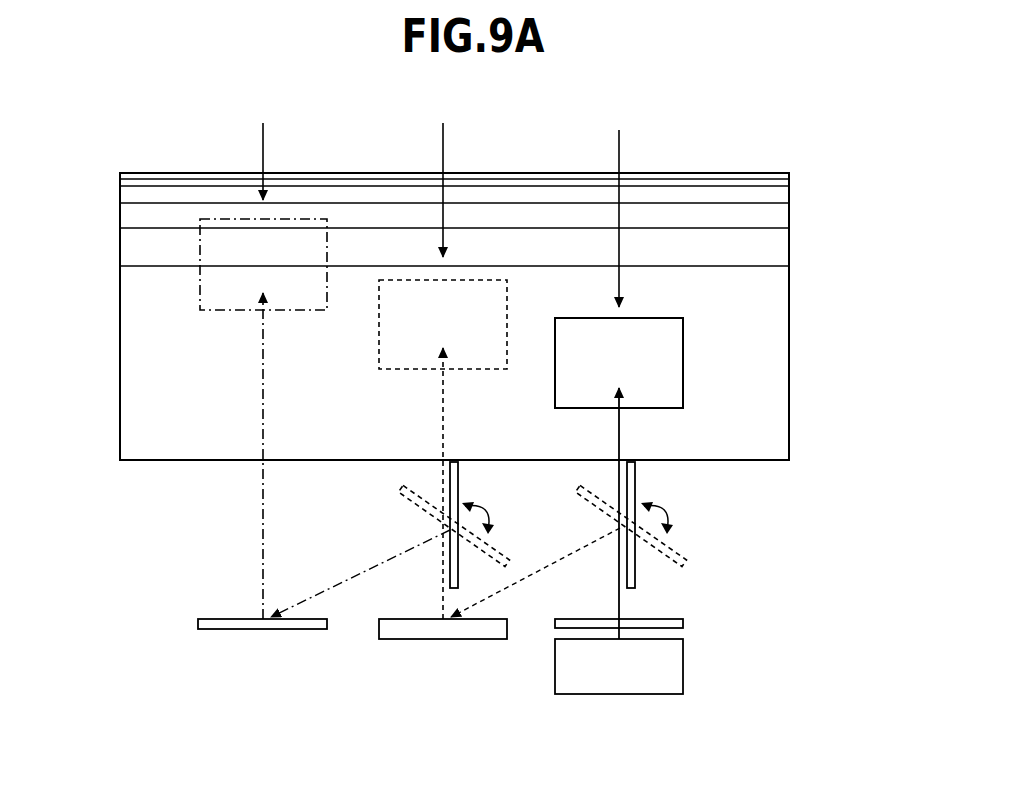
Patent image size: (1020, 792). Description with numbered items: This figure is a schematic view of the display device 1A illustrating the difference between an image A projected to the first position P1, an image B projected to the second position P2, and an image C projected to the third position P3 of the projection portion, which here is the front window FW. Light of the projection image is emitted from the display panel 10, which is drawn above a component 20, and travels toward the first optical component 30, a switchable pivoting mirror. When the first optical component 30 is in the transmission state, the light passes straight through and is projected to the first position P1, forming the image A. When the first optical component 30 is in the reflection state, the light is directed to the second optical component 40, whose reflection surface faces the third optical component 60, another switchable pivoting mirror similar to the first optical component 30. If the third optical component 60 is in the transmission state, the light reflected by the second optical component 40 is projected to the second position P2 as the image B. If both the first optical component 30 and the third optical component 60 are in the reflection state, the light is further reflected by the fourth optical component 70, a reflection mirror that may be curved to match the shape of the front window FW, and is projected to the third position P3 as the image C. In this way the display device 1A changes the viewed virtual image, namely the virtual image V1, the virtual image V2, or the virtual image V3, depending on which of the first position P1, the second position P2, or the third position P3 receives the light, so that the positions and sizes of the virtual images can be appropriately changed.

The display device 1A is at (97, 148).
The front window FW is at (792, 315).
The first position P1 is at (618, 203).
The second position P2 is at (442, 178).
The third position P3 is at (263, 150).
The image A is at (619, 478).
The image B is at (443, 449).
The image C is at (263, 419).
The virtual image V1 is at (683, 327).
The virtual image V2 is at (507, 351).
The virtual image V3 is at (200, 295).
The display panel 10 is at (683, 623).
The light source 20 is at (683, 665).
The first optical component 30 is at (635, 472).
The second optical component 40 is at (398, 639).
The third optical component 60 is at (458, 472).
The fourth optical component 70 is at (305, 629).